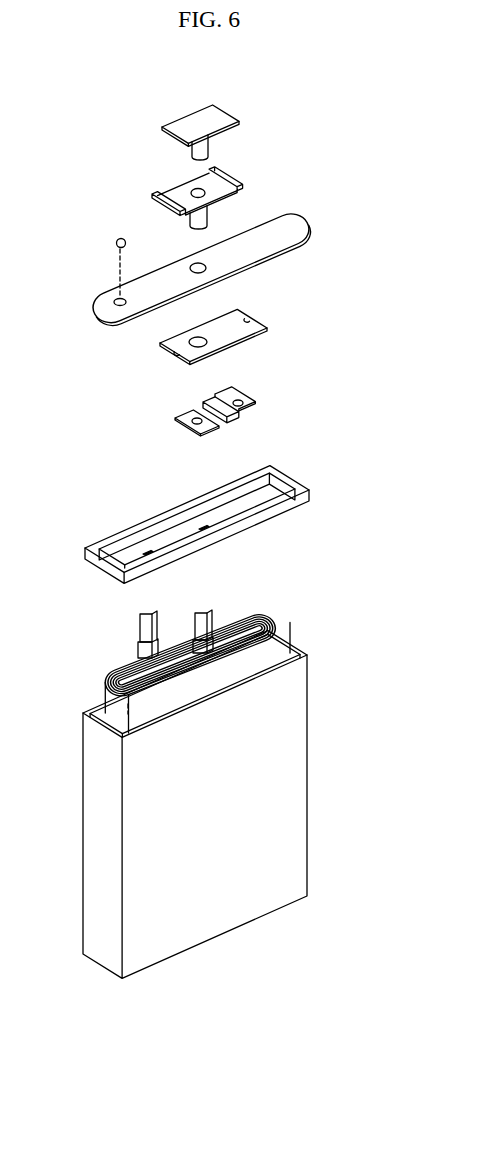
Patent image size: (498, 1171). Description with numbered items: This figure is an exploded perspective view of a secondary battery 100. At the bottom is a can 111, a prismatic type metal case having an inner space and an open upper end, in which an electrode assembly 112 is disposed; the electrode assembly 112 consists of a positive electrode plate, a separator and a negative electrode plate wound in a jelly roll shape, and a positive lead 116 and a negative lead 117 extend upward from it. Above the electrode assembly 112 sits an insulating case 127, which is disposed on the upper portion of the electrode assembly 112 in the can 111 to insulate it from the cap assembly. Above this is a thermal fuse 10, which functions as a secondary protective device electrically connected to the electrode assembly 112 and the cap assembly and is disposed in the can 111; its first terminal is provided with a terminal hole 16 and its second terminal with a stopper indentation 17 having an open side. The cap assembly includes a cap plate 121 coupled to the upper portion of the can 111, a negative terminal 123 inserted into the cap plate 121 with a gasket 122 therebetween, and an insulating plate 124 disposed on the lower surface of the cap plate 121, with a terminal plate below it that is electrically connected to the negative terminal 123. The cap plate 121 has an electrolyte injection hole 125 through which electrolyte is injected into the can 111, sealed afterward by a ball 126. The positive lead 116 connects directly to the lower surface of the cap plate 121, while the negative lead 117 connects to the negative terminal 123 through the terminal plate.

The secondary battery 100 is at (83, 101).
The thermal fuse 10 is at (197, 414).
The terminal hole 16 is at (186, 427).
The stopper indentation 17 is at (241, 402).
The can 111 is at (298, 727).
The electrode assembly 112 is at (210, 651).
The positive lead 116 is at (142, 628).
The negative lead 117 is at (203, 620).
The cap plate 121 is at (303, 225).
The gasket 122 is at (235, 176).
The negative terminal 123 is at (220, 113).
The insulating plate 124 is at (160, 348).
The electrolyte injection hole 125 is at (114, 300).
The ball 126 is at (119, 238).
The insulating case 127 is at (290, 481).